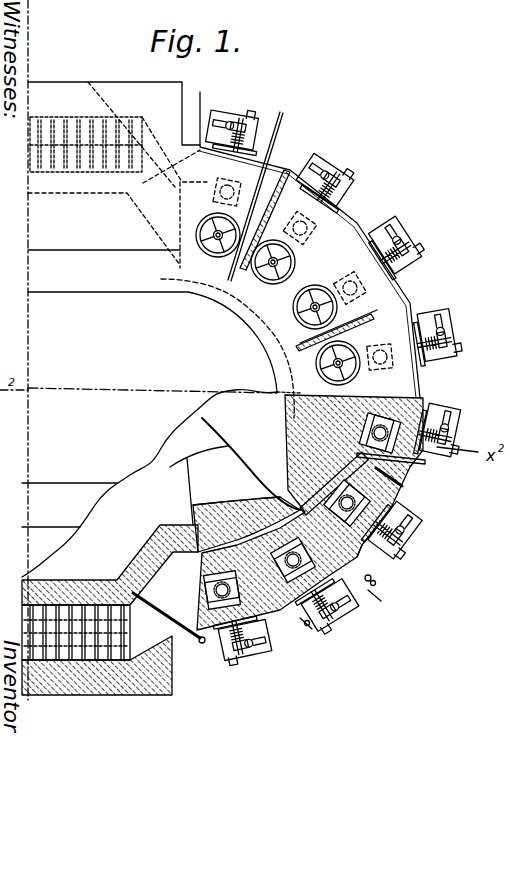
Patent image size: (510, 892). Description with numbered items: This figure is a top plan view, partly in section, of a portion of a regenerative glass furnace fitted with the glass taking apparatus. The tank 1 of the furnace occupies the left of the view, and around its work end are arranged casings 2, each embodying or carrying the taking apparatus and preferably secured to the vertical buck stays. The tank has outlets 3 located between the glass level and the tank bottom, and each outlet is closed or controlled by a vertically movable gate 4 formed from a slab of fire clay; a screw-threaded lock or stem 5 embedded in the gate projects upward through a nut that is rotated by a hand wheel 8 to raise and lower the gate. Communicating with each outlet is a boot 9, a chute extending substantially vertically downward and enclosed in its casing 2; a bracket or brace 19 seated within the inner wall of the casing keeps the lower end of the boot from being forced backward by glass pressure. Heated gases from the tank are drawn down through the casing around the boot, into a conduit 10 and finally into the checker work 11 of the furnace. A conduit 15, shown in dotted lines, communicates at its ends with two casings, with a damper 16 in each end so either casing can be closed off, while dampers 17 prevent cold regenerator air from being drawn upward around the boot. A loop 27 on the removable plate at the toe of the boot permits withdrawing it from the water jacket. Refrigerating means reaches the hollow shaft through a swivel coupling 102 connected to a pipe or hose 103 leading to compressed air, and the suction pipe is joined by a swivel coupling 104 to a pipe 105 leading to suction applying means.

The tank 1 is at (247, 397).
The casing 2 is at (347, 221).
The outlet 3 is at (277, 450).
The gate 4 is at (292, 420).
The lock or stem 5 is at (212, 242).
The hand wheel 8 is at (262, 270).
The boot 9 is at (423, 398).
The conduit 10 is at (110, 565).
The checker work 11 is at (72, 706).
The conduit 15 is at (380, 308).
The damper 16 is at (468, 469).
The damper 17 is at (193, 670).
The bracket or brace 19 is at (225, 485).
The loop 27 is at (364, 558).
The swivel connection or coupling 102 is at (376, 584).
The pipe or hose 103 is at (372, 595).
The swivel coupling 104 is at (309, 626).
The pipe 105 is at (303, 628).